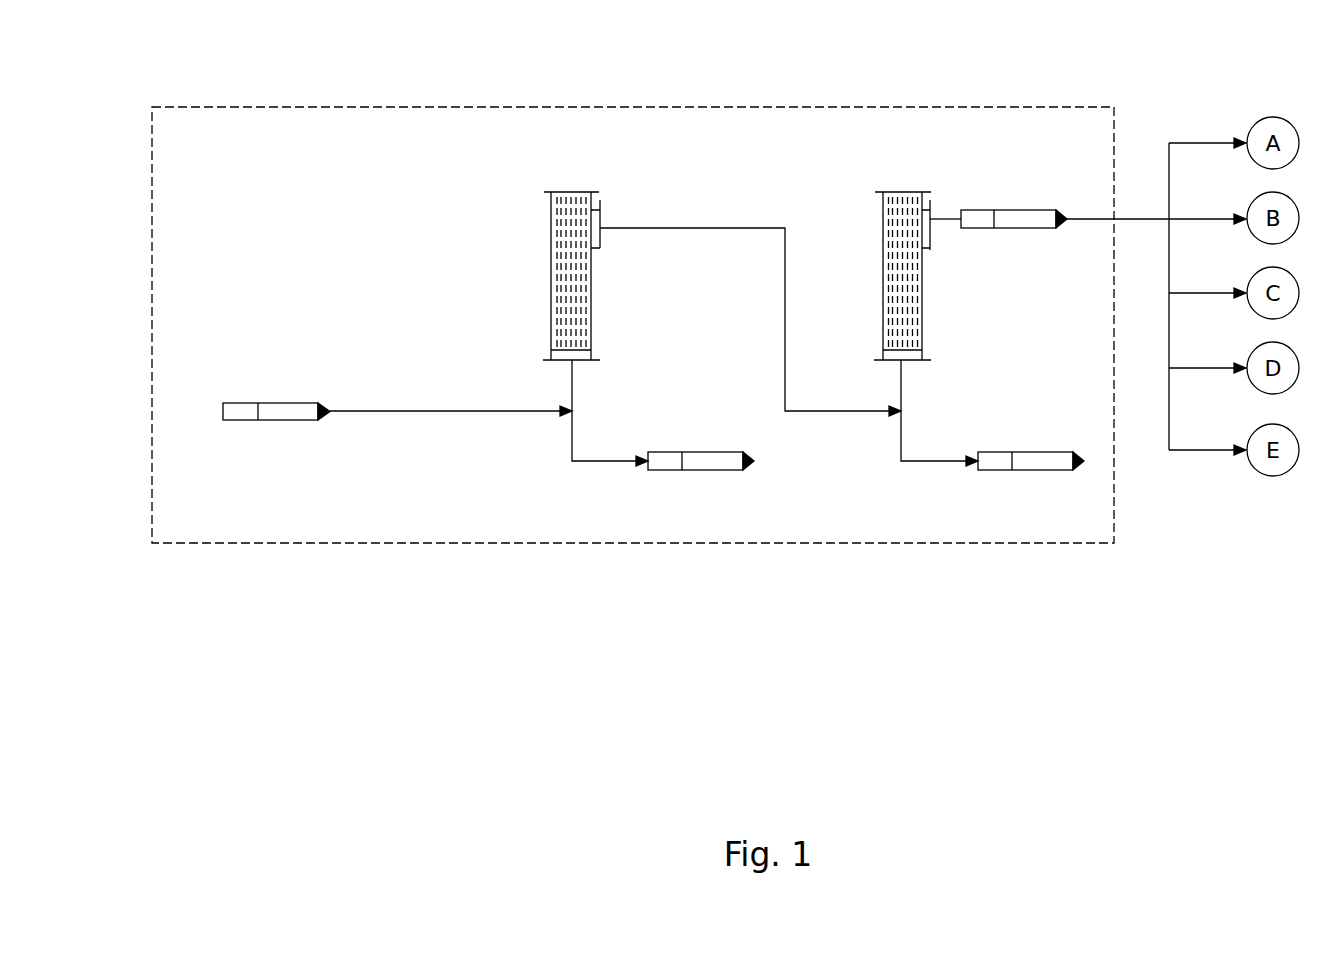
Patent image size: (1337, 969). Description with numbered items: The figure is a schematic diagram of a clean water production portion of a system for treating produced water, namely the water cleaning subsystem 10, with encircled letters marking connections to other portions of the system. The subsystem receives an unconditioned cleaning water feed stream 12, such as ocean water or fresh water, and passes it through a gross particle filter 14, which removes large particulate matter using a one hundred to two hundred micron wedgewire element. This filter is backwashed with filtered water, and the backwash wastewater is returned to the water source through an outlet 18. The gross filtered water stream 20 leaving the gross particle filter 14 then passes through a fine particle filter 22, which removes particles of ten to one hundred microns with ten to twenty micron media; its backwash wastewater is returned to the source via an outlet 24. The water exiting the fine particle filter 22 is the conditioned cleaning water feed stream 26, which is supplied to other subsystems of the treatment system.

The water cleaning subsystem 10 is at (783, 107).
The unconditioned cleaning water feed stream 12 is at (286, 408).
The gross particle filter 14 is at (551, 225).
The outlet 18 is at (715, 452).
The gross filtered water stream 20 is at (710, 228).
The fine particle filter 22 is at (920, 307).
The outlet 24 is at (1043, 452).
The conditioned cleaning water feed stream 26 is at (1018, 210).